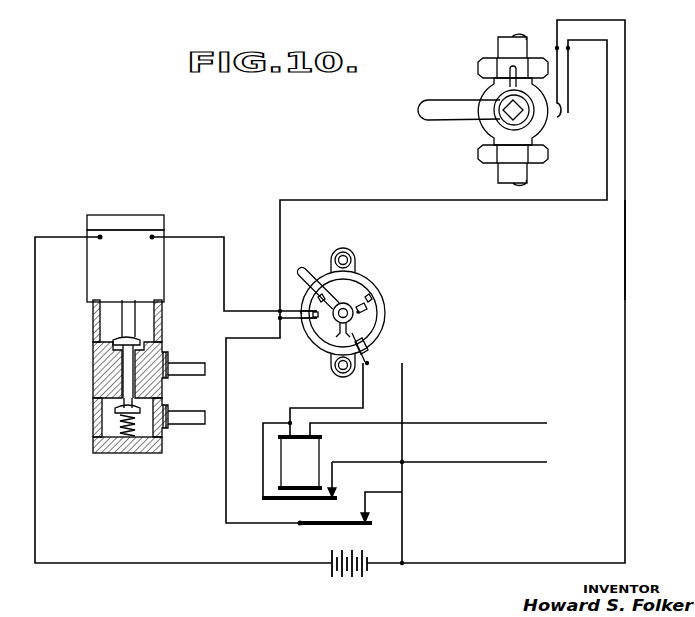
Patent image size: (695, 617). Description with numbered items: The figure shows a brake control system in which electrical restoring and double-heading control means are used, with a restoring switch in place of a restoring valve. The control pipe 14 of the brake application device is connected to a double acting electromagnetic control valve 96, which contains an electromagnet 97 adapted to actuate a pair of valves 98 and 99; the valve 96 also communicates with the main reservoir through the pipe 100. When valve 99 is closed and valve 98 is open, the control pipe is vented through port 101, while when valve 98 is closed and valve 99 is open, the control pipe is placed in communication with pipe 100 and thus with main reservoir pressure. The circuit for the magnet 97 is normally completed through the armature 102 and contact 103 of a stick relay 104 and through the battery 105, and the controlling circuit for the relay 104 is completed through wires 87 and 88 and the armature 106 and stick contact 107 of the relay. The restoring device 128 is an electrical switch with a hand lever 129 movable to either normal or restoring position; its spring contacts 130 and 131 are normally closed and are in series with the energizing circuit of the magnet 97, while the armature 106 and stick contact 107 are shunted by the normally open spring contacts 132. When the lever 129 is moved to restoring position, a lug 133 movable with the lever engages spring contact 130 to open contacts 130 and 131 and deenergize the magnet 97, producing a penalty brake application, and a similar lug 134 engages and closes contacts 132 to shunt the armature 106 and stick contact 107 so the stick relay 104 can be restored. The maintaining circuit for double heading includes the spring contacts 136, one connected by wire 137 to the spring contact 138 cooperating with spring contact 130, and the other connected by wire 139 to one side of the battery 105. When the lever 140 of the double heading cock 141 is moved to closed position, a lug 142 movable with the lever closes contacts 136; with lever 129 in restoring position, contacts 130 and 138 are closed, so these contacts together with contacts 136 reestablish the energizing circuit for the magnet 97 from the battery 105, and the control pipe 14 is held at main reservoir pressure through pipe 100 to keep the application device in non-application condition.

The control pipe 14 is at (185, 362).
The wire 87 is at (440, 426).
The wire 88 is at (451, 462).
The double acting electromagnetic control valve 96 is at (137, 270).
The electromagnet 97 is at (136, 215).
The valve 98 is at (113, 341).
The valve 99 is at (115, 410).
The pipe 100 is at (190, 425).
The port 101 is at (161, 323).
The armature 102 is at (356, 526).
The contact 103 is at (370, 522).
The stick relay 104 is at (321, 450).
The battery 105 is at (347, 580).
The armature 106 is at (325, 500).
The stick contact 107 is at (343, 500).
The restoring device 128 is at (384, 313).
The hand lever 129 is at (303, 272).
The spring contact 130 is at (283, 311).
The spring contact 131 is at (293, 322).
The spring contacts 132 is at (365, 348).
The lug 133 is at (340, 338).
The lug 134 is at (362, 310).
The spring contacts 136 is at (569, 98).
The wire 137 is at (409, 199).
The spring contact 138 is at (300, 308).
The wire 139 is at (625, 262).
The lever 140 is at (449, 113).
The double heading cock 141 is at (487, 89).
The lug 142 is at (511, 64).